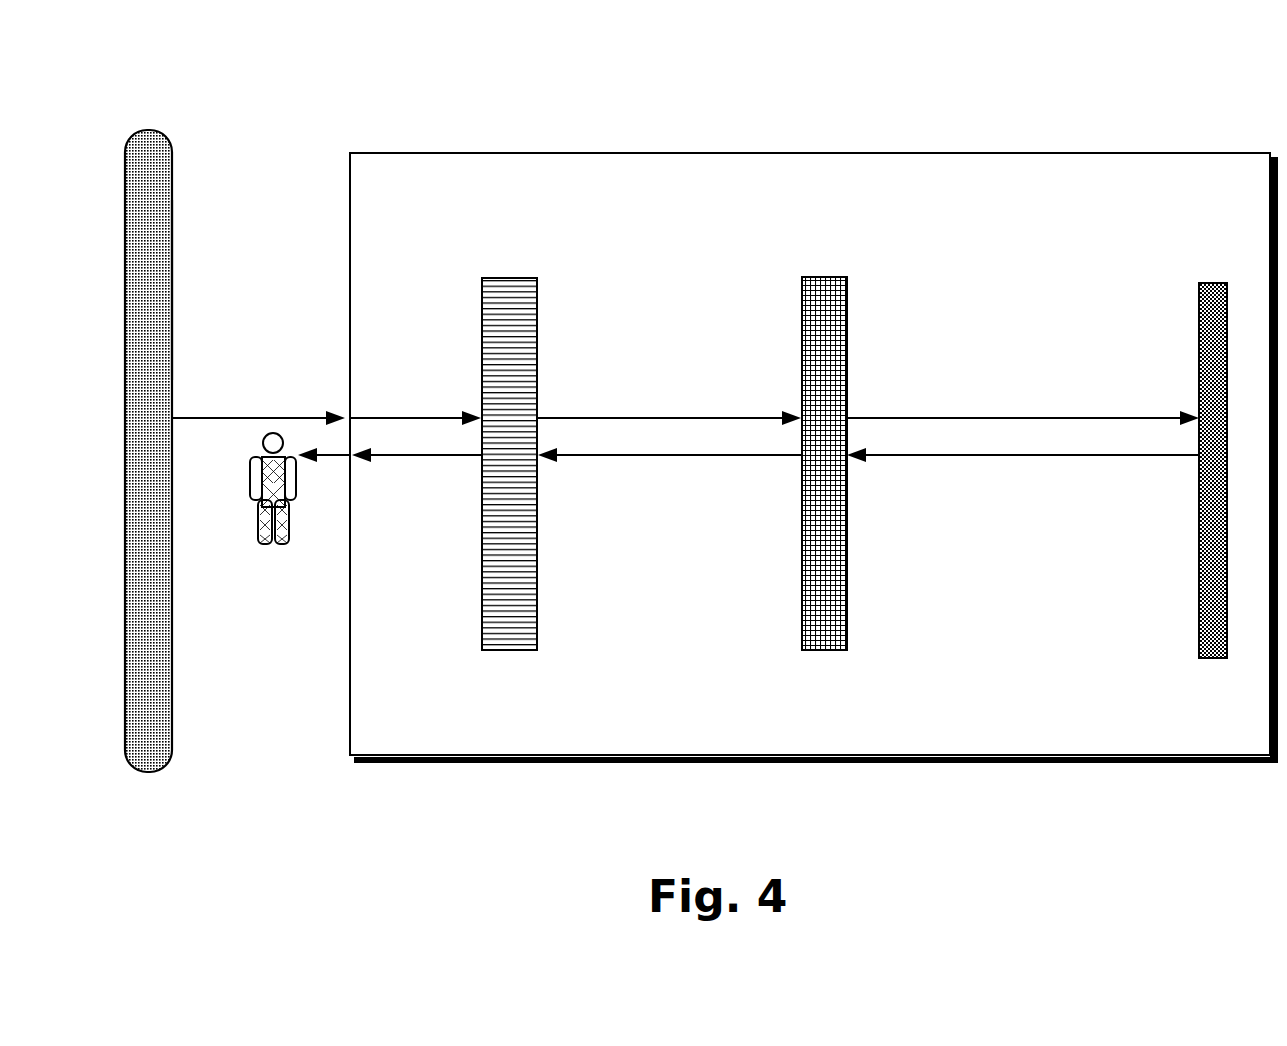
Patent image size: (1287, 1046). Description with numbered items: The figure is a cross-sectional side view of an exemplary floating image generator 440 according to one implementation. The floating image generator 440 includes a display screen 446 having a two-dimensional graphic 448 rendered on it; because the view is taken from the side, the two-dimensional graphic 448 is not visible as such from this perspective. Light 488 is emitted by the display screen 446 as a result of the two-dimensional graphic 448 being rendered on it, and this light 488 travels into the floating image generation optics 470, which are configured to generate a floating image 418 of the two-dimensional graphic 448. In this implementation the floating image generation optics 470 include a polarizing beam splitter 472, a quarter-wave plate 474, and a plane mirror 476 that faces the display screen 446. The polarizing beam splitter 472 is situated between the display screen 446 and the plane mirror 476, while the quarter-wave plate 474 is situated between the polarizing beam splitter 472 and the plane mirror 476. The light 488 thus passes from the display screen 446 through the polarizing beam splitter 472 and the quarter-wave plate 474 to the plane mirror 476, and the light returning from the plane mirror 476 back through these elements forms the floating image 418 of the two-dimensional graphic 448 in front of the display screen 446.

The floating image generator 440 is at (490, 63).
The display screen 446 is at (170, 773).
The 2D graphic 448 is at (195, 282).
The light 488 is at (302, 410).
The floating image 418 is at (268, 548).
The floating image generation optics 470 is at (810, 454).
The polarizing beam splitter 472 is at (515, 652).
The quarter-wave plate 474 is at (825, 652).
The plane mirror 476 is at (1213, 660).